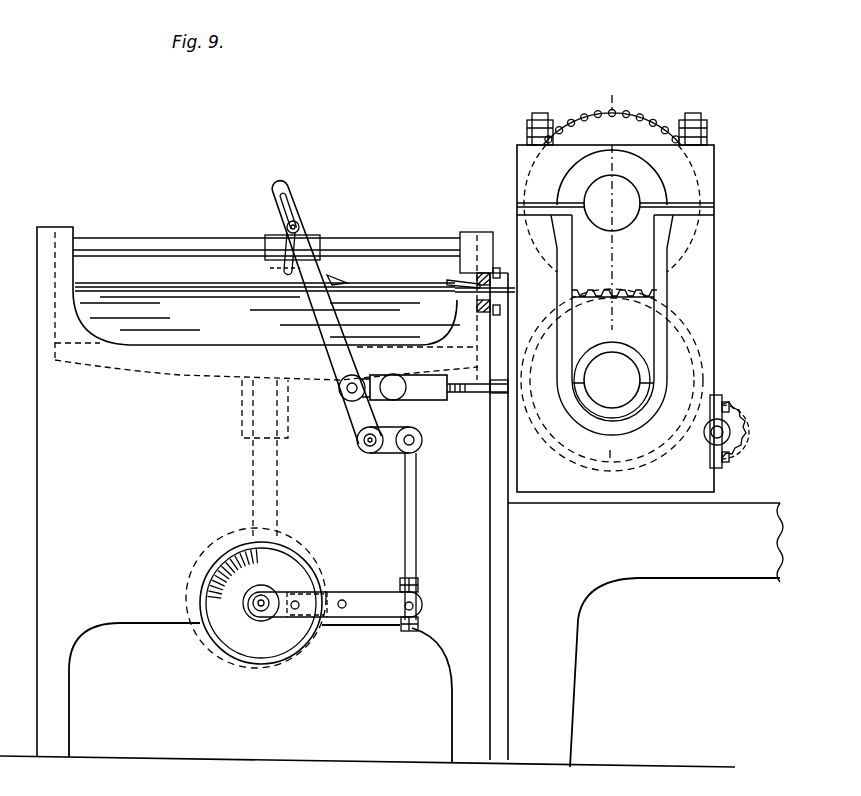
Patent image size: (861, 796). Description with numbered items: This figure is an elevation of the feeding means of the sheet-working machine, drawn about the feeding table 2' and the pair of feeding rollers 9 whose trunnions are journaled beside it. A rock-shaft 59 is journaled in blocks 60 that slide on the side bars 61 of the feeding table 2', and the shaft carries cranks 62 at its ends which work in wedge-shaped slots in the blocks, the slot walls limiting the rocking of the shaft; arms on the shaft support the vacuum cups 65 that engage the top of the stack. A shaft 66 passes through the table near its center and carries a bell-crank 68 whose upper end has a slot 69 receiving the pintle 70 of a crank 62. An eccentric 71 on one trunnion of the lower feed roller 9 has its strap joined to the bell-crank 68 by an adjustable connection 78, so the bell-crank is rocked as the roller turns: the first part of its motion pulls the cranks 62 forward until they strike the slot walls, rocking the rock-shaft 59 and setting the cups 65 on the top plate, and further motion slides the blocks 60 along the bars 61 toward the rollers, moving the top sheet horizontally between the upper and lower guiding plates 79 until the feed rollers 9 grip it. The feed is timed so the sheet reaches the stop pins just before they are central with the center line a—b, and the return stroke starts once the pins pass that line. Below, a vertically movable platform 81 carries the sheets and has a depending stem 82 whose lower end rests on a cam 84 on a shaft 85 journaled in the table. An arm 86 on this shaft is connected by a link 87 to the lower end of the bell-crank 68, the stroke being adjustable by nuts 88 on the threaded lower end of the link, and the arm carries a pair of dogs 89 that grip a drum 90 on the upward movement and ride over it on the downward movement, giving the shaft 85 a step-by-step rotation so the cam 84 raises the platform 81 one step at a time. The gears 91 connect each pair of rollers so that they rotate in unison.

The feeding table 2' is at (367, 497).
The feeding roller 9 is at (653, 453).
The rock-shaft 59 is at (310, 272).
The blocks 60 is at (263, 240).
The side bars 61 is at (410, 242).
The cranks 62 is at (283, 260).
The vacuum cups 65 is at (352, 287).
The shaft 66 is at (370, 445).
The bell-crank 68 is at (332, 357).
The slots 69 is at (281, 182).
The pintles 70 is at (300, 220).
The eccentric 71 is at (615, 293).
The adjustable connection 78 is at (437, 396).
The guiding plates 79 is at (505, 285).
The platform 81 is at (168, 370).
The stem 82 is at (272, 470).
The cam 84 is at (312, 652).
The shaft 85 is at (256, 607).
The arm 86 is at (381, 612).
The link 87 is at (413, 525).
The nuts 88 is at (423, 616).
The dogs 89 is at (320, 590).
The drum 90 is at (297, 553).
The gears 91 is at (700, 318).
The center line a is at (613, 247).
The center line b is at (607, 510).